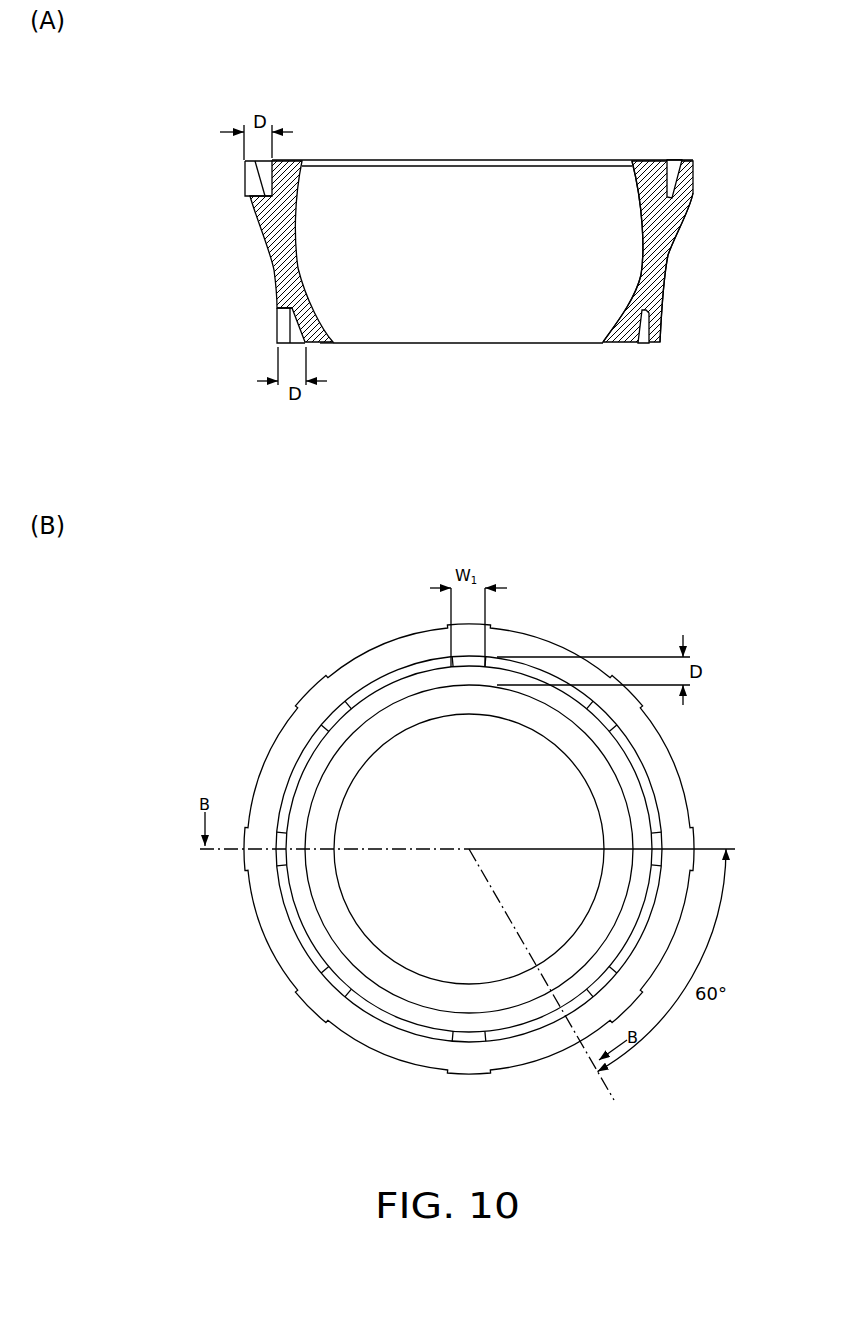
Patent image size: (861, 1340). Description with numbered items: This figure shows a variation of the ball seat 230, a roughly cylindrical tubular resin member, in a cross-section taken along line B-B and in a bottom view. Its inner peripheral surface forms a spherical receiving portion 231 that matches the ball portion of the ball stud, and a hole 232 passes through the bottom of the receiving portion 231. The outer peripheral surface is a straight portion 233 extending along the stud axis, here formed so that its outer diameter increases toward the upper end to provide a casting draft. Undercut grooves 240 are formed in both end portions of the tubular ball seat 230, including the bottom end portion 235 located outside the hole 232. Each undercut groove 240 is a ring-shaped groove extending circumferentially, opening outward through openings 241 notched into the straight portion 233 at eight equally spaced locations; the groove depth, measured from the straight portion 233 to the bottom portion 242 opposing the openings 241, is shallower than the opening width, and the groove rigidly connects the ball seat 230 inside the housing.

The ball seat 230 is at (190, 117).
The receiving portion 231 is at (643, 240).
The hole 232 is at (600, 343).
The straight portion 233 is at (663, 272).
The bottom end portion 235 is at (320, 343).
The undercut groove 240 is at (243, 170).
The openings 241 is at (252, 185).
The bottom portion 242 is at (675, 165).